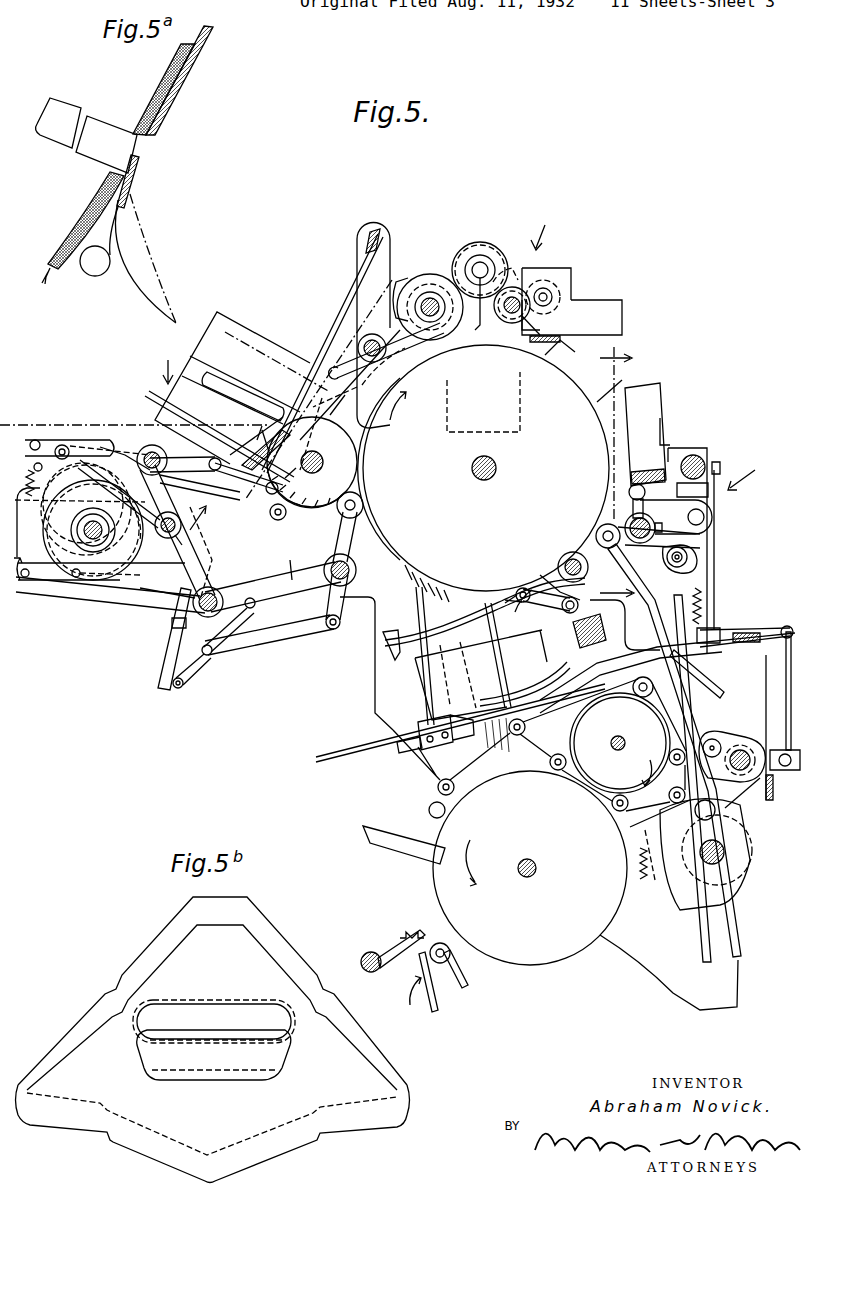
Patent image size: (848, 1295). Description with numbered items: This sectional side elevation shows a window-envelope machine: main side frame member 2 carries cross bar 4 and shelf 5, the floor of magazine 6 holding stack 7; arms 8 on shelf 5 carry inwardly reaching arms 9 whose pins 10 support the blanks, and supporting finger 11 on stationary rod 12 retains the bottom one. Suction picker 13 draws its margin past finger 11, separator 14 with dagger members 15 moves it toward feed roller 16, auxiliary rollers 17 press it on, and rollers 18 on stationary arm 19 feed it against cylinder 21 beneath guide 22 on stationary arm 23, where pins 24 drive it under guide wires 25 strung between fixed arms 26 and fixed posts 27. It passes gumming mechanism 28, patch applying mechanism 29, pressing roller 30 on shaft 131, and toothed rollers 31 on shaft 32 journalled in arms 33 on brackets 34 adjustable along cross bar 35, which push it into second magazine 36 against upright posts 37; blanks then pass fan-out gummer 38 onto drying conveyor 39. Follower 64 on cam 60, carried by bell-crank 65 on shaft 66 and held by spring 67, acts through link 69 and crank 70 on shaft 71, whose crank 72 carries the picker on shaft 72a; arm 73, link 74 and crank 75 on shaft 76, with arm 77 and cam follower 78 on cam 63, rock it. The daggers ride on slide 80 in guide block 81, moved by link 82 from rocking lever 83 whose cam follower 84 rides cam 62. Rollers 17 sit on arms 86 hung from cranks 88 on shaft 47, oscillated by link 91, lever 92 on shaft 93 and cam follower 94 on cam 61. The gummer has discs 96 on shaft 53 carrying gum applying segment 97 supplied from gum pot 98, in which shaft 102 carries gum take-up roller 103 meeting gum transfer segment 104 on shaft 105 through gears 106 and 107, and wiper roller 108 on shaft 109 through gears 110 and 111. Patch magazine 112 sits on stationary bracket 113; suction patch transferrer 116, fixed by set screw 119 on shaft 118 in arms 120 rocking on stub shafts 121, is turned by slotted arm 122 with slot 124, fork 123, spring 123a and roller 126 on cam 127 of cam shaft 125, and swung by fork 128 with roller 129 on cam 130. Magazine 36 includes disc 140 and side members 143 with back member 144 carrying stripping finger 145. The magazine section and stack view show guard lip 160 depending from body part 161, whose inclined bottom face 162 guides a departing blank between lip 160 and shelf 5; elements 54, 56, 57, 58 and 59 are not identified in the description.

In FIG. 5, the frame 2 is at (704, 448).
In FIG. 5, the guide 4 is at (366, 236).
In FIG. 5A, the strip 5 is at (176, 95).
In FIG. 5, the strip 5 is at (345, 300).
In FIG. 5, the direction arrow 6 is at (168, 364).
In FIG. 5, the feed table 7 is at (236, 312).
In FIG. 5, the section line 8 is at (263, 433).
In FIG. 5, the feed roller 9 is at (312, 462).
In FIG. 5, the guide bar 10 is at (152, 392).
In FIG. 5A, the strip end 11 is at (45, 284).
In FIG. 5, the strip end 11 is at (250, 458).
In FIG. 5, the link 12 is at (210, 458).
In FIG. 5, the roller 13 is at (286, 465).
In FIG. 5, the arm 14 is at (181, 545).
In FIG. 5, the pin 15 is at (291, 497).
In FIG. 5A, the drum 16 is at (150, 316).
In FIG. 5, the drum 16 is at (356, 450).
In FIG. 5A, the roller 17 is at (93, 277).
In FIG. 5, the roller 17 is at (280, 483).
In FIG. 5, the link 18 is at (350, 537).
In FIG. 5, the roller 19 is at (346, 518).
In FIG. 5, the drum surface 21 is at (400, 556).
In FIG. 5, the guide 22 is at (377, 375).
In FIG. 5, the bar 23 is at (345, 358).
In FIG. 5, the direction arrow 24 is at (479, 478).
In FIG. 5, the sheet 25 is at (472, 419).
In FIG. 5, the guide plate 26 is at (322, 360).
In FIG. 5, the rod 27 is at (502, 625).
In FIG. 5, the printing unit 28 is at (542, 228).
In FIG. 5, the mechanism 29 is at (748, 471).
In FIG. 5, the guide 30 is at (556, 578).
In FIG. 5, the roller 31 is at (520, 588).
In FIG. 5, the lever 32 is at (512, 590).
In FIG. 5, the roller 33 is at (562, 596).
In FIG. 5, the block 34 is at (570, 628).
In FIG. 5, the bar 35 is at (578, 650).
In FIG. 5, the bracket 36 is at (374, 708).
In FIG. 5, the rod 37 is at (418, 602).
In FIG. 5, the chute 38 is at (396, 817).
In FIG. 5, the stripper 39 is at (414, 975).
In FIG. 5, the shaft 47 is at (317, 458).
In FIG. 5, the shaft 53 is at (430, 318).
In FIG. 5, the drum shaft 54 is at (482, 482).
In FIG. 5, the pin 56 is at (385, 346).
In FIG. 5, the guide 57 is at (345, 332).
In FIG. 5, the gear 58 is at (167, 538).
In FIG. 5, the shaft 59 is at (85, 535).
In FIG. 5, the gear 60 is at (113, 560).
In FIG. 5, the gear 61 is at (40, 500).
In FIG. 5, the link 62 is at (101, 572).
In FIG. 5, the link 63 is at (150, 598).
In FIG. 5, the link 64 is at (70, 590).
In FIG. 5, the link 65 is at (100, 596).
In FIG. 5, the gear 66 is at (193, 600).
In FIG. 5, the hook 67 is at (25, 583).
In FIG. 5, the link 69 is at (300, 640).
In FIG. 5, the link 70 is at (344, 598).
In FIG. 5, the shaft 71 is at (356, 566).
In FIG. 5, the bar 72 is at (298, 580).
In FIG. 5, the bar 72a is at (292, 570).
In FIG. 5, the rod 73 is at (207, 562).
In FIG. 5, the arm 74 is at (193, 518).
In FIG. 5, the link 75 is at (112, 455).
In FIG. 5, the link 76 is at (175, 545).
In FIG. 5, the lever 77 is at (40, 438).
In FIG. 5, the link 78 is at (85, 445).
In FIG. 5, the rod 80 is at (168, 645).
In FIG. 5, the block 81 is at (170, 623).
In FIG. 5, the link 82 is at (193, 675).
In FIG. 5, the pivot 83 is at (255, 603).
In FIG. 5, the link 84 is at (105, 445).
In FIG. 5, the roller 86 is at (275, 513).
In FIG. 5, the segment 88 is at (300, 494).
In FIG. 5, the rod 91 is at (200, 490).
In FIG. 5, the cam 92 is at (90, 458).
In FIG. 5, the gear 93 is at (150, 450).
In FIG. 5, the pivot 94 is at (62, 445).
In FIG. 5, the roller 96 is at (432, 272).
In FIG. 5, the bracket 97 is at (400, 276).
In FIG. 5, the bracket 98 is at (622, 320).
In FIG. 5, the gear 102 is at (508, 316).
In FIG. 5, the housing 103 is at (530, 280).
In FIG. 5, the pawl 104 is at (504, 262).
In FIG. 5, the roller 105 is at (481, 258).
In FIG. 5, the arm 106 is at (478, 292).
In FIG. 5, the roller 107 is at (468, 245).
In FIG. 5, the gear 108 is at (560, 292).
In FIG. 5, the shaft 109 is at (550, 300).
In FIG. 5, the arm 110 is at (524, 332).
In FIG. 5, the housing 111 is at (560, 285).
In FIG. 5, the block 112 is at (660, 405).
In FIG. 5, the bracket 113 is at (668, 428).
In FIG. 5, the roller 116 is at (629, 491).
In FIG. 5, the shaft 118 is at (626, 523).
In FIG. 5, the lever 119 is at (700, 540).
In FIG. 5, the lever 120 is at (708, 527).
In FIG. 5, the pivot 121 is at (704, 514).
In FIG. 5, the pivot 122 is at (698, 565).
In FIG. 5, the spring 123 is at (704, 603).
In FIG. 5, the rod 123a is at (705, 636).
In FIG. 5, the bar 124 is at (660, 570).
In FIG. 5, the cam 125 is at (748, 770).
In FIG. 5, the bar 126 is at (740, 818).
In FIG. 5, the frame part 127 is at (686, 905).
In FIG. 5, the bar 128 is at (655, 648).
In FIG. 5, the spring 129 is at (660, 840).
In FIG. 5, the shaft 130 is at (700, 860).
In FIG. 5, the shaft 131 is at (568, 555).
In FIG. 5, the bar 140 is at (372, 750).
In FIG. 5, the plate 143 is at (485, 650).
In FIG. 5, the hook 144 is at (400, 702).
In FIG. 5, the guide 145 is at (448, 625).
In FIG. 5A, the label base 160 is at (123, 192).
In FIG. 5B, the label base 160 is at (208, 1075).
In FIG. 5A, the label 161 is at (100, 128).
In FIG. 5, the label 161 is at (236, 378).
In FIG. 5B, the label 161 is at (205, 1005).
In FIG. 5A, the strip portion 162 is at (141, 152).